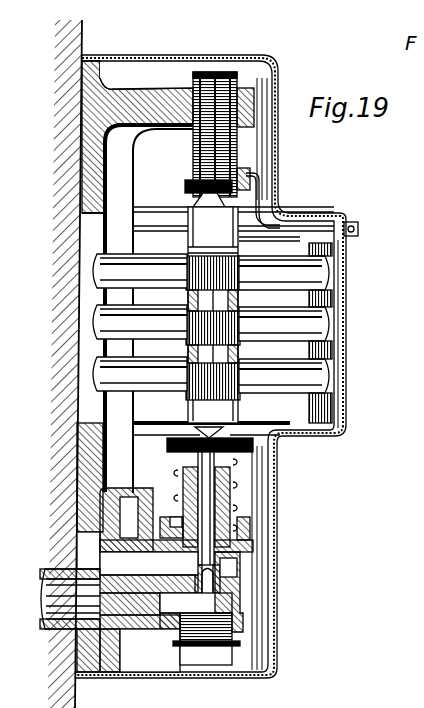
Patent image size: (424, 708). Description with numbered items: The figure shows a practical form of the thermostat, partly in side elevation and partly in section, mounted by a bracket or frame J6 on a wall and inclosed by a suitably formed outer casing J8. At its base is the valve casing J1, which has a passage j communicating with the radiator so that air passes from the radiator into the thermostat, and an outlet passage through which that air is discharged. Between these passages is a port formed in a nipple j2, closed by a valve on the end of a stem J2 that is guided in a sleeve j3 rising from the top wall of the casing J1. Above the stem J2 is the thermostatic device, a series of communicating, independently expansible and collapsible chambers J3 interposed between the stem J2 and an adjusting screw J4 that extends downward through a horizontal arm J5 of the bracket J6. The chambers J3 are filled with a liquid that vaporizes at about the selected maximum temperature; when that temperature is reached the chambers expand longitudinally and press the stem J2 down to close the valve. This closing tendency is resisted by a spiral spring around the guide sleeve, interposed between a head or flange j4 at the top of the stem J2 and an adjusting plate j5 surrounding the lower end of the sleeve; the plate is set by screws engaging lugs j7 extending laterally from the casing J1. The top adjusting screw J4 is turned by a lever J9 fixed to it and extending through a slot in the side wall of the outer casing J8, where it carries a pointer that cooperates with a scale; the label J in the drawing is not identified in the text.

The casing J is at (244, 366).
The casing J1 is at (232, 495).
The stem J2 is at (147, 567).
The expansible and collapsible bulbs or chambers J3 is at (340, 336).
The adjusting screw J4 is at (241, 72).
The horizontal arm J5 is at (147, 84).
The bracket or frame J6 is at (100, 163).
The casing J8 is at (279, 181).
The lever J9 is at (292, 214).
The passage j is at (157, 602).
The nipple j2 is at (243, 545).
The sleeve j3 is at (245, 469).
The head or flange j4 is at (168, 445).
The adjusting plate j5 is at (245, 509).
The lugs j7 is at (180, 470).